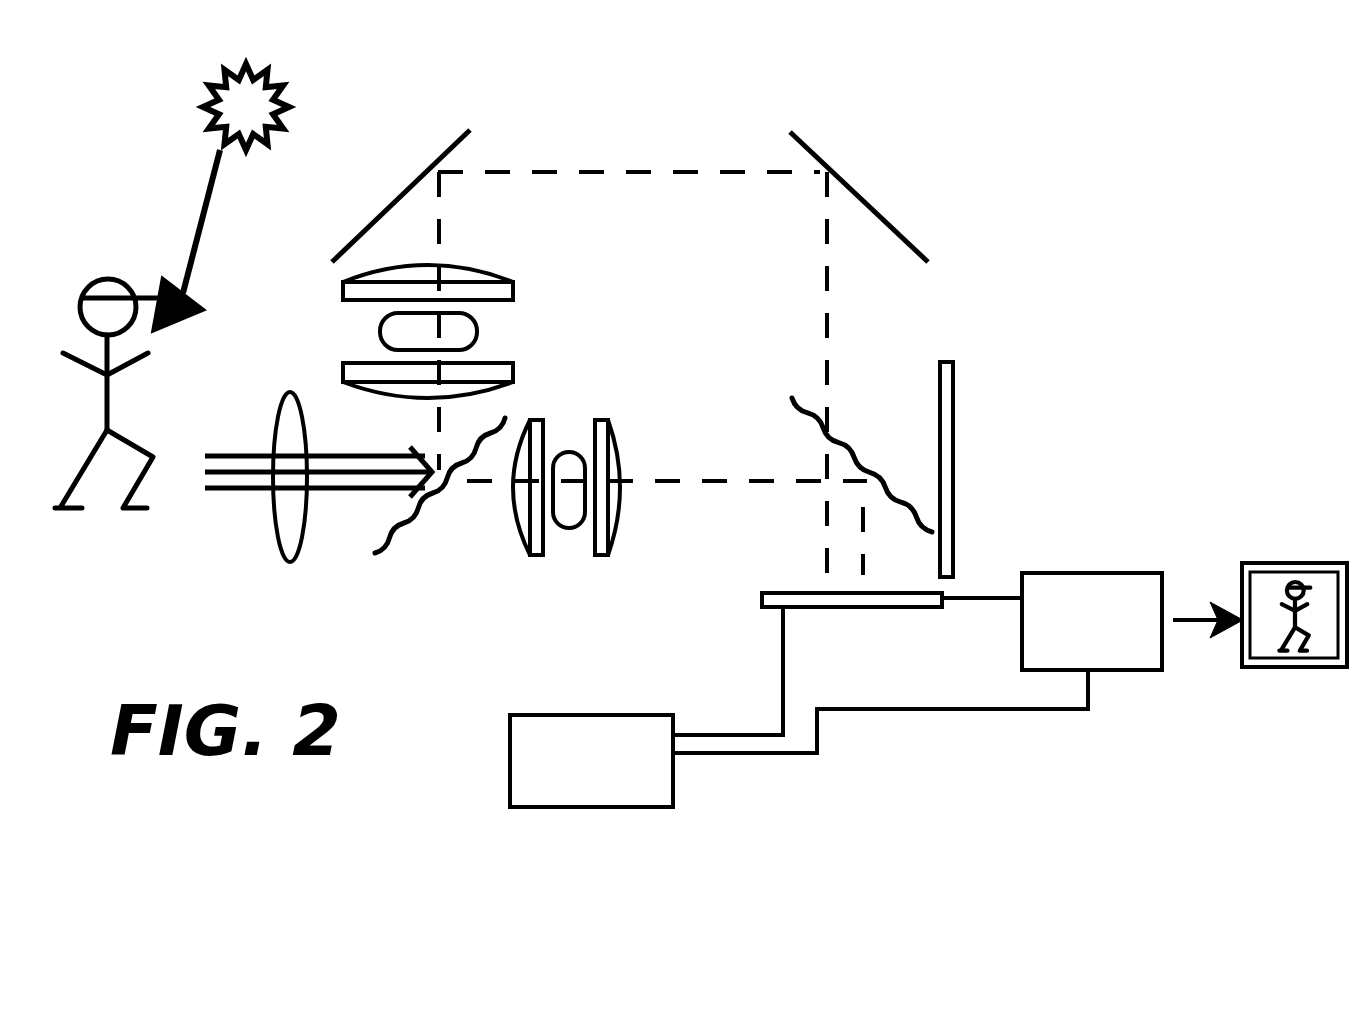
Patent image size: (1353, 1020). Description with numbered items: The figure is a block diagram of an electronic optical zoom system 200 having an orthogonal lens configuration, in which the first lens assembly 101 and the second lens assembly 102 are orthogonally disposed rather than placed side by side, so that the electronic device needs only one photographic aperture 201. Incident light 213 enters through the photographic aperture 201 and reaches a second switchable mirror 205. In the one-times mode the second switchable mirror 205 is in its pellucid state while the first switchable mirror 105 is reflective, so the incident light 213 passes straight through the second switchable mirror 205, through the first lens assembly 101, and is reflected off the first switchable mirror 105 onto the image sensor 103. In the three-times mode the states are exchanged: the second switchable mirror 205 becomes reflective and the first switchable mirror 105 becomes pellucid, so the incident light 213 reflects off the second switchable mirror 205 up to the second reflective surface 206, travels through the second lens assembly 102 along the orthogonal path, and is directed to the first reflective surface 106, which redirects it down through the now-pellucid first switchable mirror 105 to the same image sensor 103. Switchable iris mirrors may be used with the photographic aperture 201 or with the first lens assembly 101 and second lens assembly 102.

The electronic optical zoom system 200 is at (1066, 223).
The incident light 213 is at (248, 492).
The photographic aperture 201 is at (303, 537).
The second switchable mirror 205 is at (417, 520).
The second reflective surface 206 is at (437, 157).
The second lens assembly 102 is at (513, 297).
The first lens assembly 101 is at (615, 428).
The first reflective surface 106 is at (822, 160).
The first switchable mirror 105 is at (848, 445).
The image sensor 103 is at (878, 608).